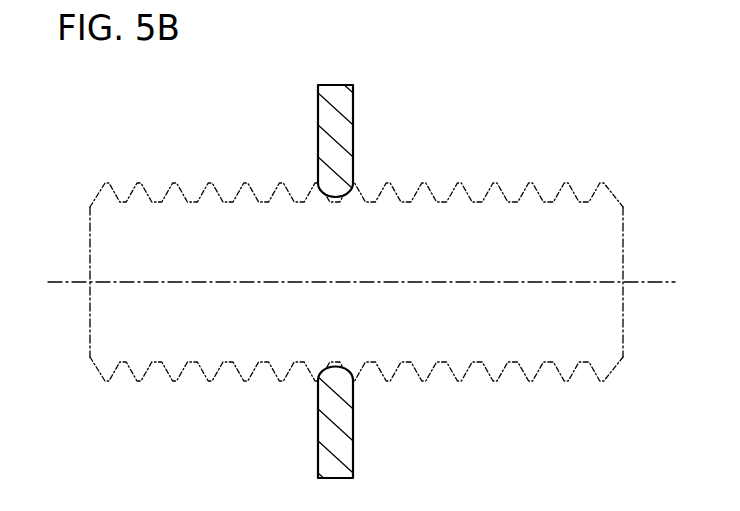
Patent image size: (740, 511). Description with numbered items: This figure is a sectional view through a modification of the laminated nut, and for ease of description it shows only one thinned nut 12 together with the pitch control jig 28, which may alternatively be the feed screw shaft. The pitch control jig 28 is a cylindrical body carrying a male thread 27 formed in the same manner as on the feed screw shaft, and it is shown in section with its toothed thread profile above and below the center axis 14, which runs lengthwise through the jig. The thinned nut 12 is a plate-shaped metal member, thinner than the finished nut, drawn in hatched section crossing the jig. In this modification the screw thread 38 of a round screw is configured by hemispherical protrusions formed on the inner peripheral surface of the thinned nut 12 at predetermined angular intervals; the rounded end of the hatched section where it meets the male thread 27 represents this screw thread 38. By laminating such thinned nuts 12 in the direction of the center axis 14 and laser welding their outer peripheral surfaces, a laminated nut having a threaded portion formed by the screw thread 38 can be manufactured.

The thinned nut 12 is at (346, 278).
The center axis 14 is at (63, 284).
The male thread 27 is at (181, 192).
The pitch control jig 28 is at (367, 257).
The screw thread 38 is at (335, 186).